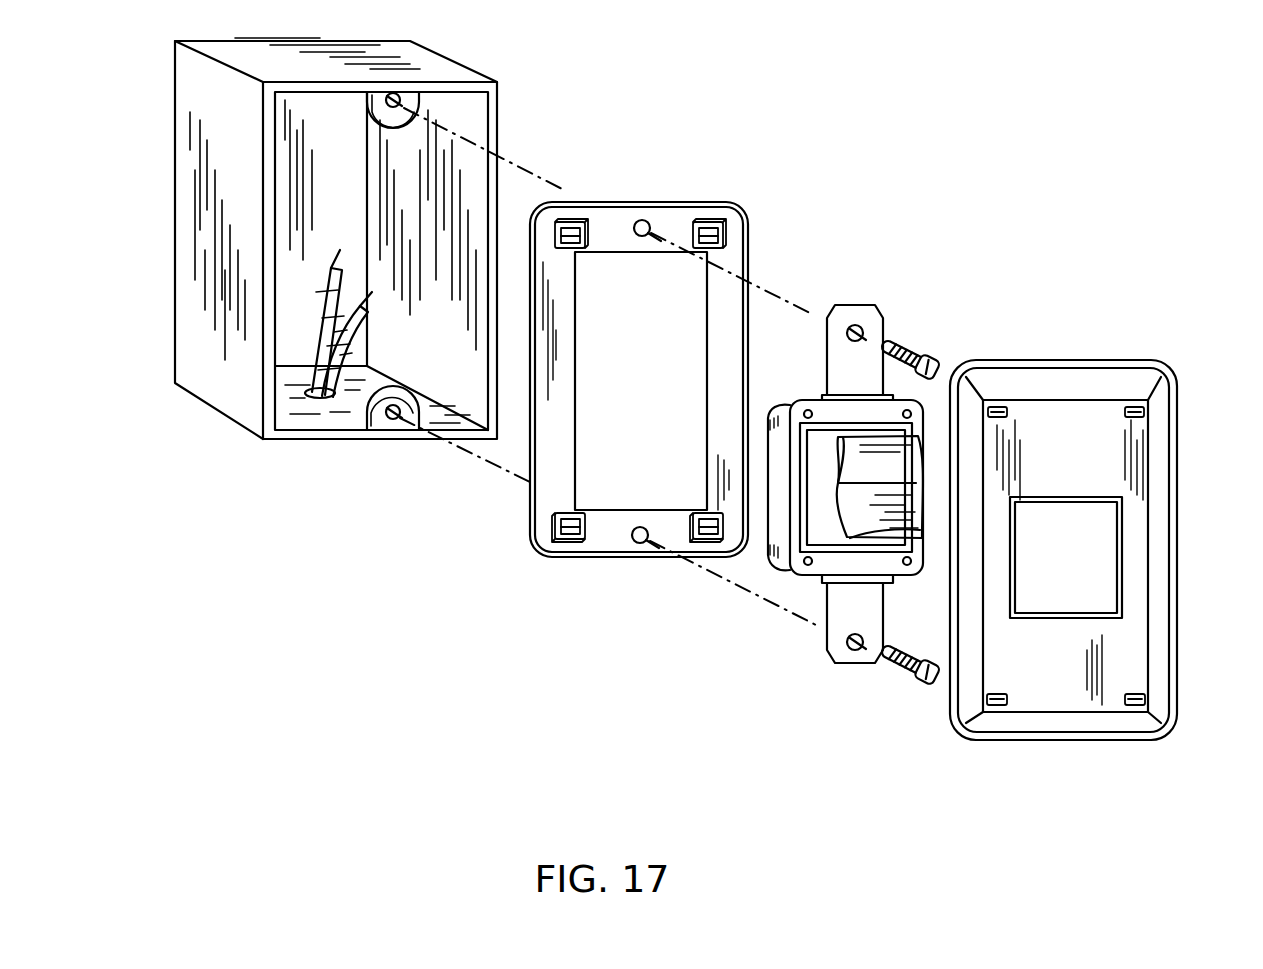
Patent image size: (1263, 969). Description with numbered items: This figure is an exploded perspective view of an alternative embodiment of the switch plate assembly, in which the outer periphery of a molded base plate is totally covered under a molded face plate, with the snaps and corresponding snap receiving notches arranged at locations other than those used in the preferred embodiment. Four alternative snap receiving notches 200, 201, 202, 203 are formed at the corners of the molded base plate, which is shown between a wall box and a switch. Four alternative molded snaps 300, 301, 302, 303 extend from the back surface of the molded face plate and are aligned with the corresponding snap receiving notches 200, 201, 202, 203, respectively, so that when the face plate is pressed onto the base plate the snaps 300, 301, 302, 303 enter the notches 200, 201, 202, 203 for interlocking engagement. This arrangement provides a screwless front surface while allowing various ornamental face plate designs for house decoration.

The alternative snap receiving notch 200 is at (568, 232).
The alternative snap receiving notch 201 is at (722, 232).
The alternative snap receiving notch 202 is at (722, 542).
The alternative snap receiving notch 203 is at (570, 540).
The alternative molded snap 300 is at (1000, 410).
The alternative molded snap 301 is at (1137, 410).
The alternative molded snap 302 is at (1135, 706).
The alternative molded snap 303 is at (997, 706).